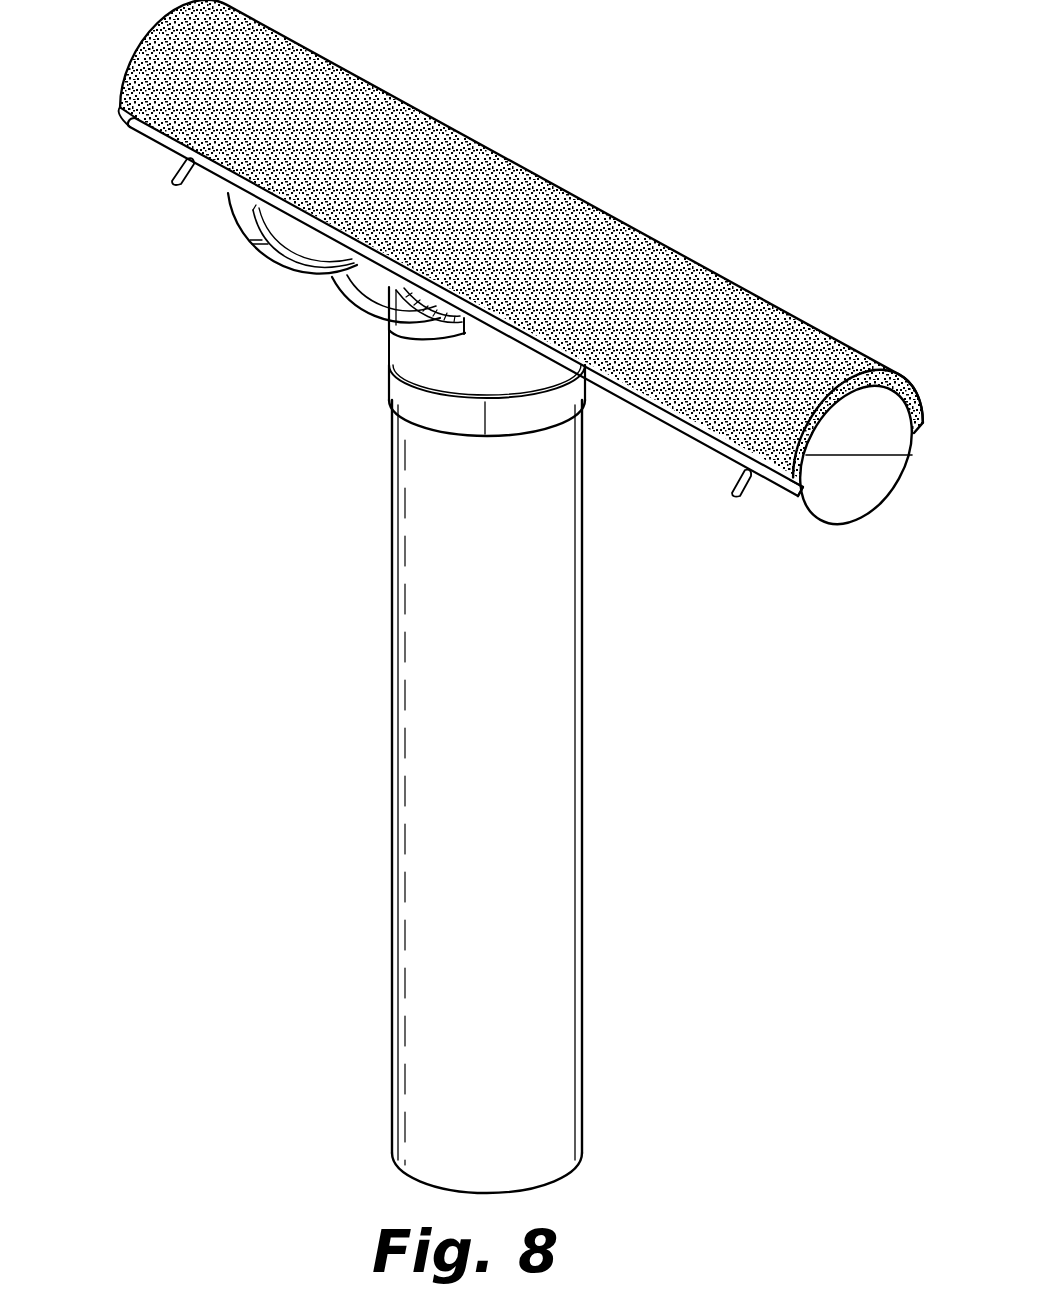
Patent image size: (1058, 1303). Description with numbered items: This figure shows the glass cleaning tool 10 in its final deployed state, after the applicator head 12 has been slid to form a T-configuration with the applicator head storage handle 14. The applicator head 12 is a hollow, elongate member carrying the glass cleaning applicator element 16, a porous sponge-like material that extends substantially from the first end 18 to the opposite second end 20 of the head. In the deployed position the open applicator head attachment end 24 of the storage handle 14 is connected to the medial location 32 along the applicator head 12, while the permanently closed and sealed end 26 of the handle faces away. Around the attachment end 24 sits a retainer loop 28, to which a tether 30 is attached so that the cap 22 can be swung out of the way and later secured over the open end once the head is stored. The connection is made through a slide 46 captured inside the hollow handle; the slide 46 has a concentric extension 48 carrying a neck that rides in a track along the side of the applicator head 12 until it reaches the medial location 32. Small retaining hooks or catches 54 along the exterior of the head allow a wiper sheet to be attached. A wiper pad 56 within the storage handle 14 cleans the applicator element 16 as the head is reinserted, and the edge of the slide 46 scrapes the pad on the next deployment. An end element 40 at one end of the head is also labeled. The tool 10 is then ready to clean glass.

The glass cleaning tool 10 is at (100, 843).
The applicator head 12 is at (538, 352).
The applicator head storage handle 14 is at (488, 806).
The glass cleaning applicator element 16 is at (578, 192).
The first end 18 is at (207, 165).
The second end 20 is at (803, 505).
The cap 22 is at (240, 235).
The applicator head attachment end 24 is at (395, 337).
The closed and sealed end 26 is at (400, 1168).
The retainer loop 28 is at (433, 412).
The tether 30 is at (340, 292).
The medial location 32 is at (455, 312).
The bar end cap 40 is at (143, 122).
The slide 46 is at (390, 326).
The concentric extension 48 is at (464, 334).
The retaining hooks or catches 54 is at (172, 177).
The wiper pad 56 is at (395, 350).